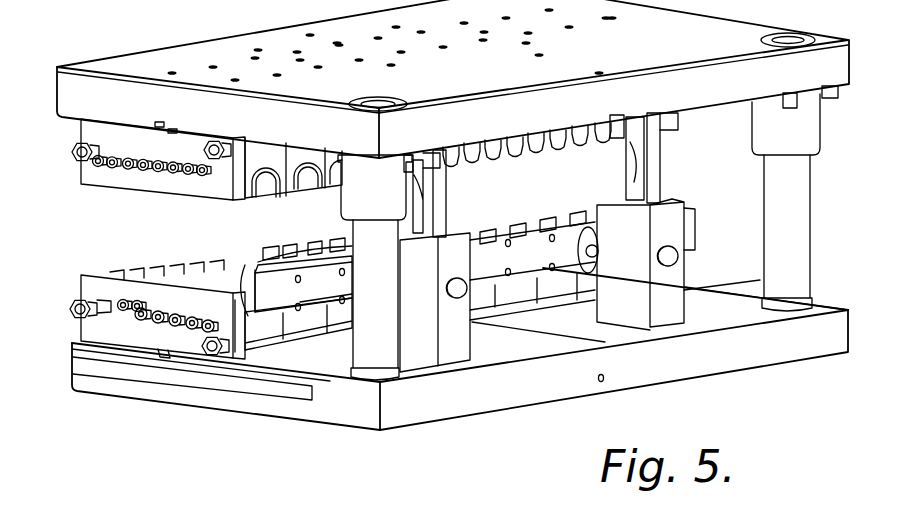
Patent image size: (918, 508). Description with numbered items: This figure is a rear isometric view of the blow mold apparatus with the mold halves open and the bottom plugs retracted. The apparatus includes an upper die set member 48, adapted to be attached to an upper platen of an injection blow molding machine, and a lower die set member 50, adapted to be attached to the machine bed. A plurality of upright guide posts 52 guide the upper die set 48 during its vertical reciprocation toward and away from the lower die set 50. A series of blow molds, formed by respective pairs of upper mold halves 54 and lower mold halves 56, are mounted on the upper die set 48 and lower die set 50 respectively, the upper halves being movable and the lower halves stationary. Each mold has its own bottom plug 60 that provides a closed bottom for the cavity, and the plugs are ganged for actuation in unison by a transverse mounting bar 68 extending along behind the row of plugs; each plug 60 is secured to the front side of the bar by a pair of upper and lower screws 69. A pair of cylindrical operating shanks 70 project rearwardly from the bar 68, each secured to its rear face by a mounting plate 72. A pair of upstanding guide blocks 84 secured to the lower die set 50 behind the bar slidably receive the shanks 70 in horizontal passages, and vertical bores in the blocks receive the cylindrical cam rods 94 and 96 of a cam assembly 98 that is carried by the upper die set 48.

The upper die set member 48 is at (72, 92).
The lower die set member 50 is at (275, 408).
The upright guide posts 52 is at (393, 362).
The upper mold halves 54 is at (85, 175).
The lower mold halves 56 is at (85, 331).
The bottom plug 60 is at (247, 262).
The transverse mounting bar 68 is at (335, 304).
The upper and lower screws 69 is at (300, 306).
The cylindrical operating shanks 70 is at (458, 295).
The mounting plate 72 is at (588, 262).
The upstanding guide blocks 84 is at (455, 345).
The cam rod 94 is at (423, 175).
The cam rod 96 is at (438, 210).
The cam assembly 98 is at (455, 184).